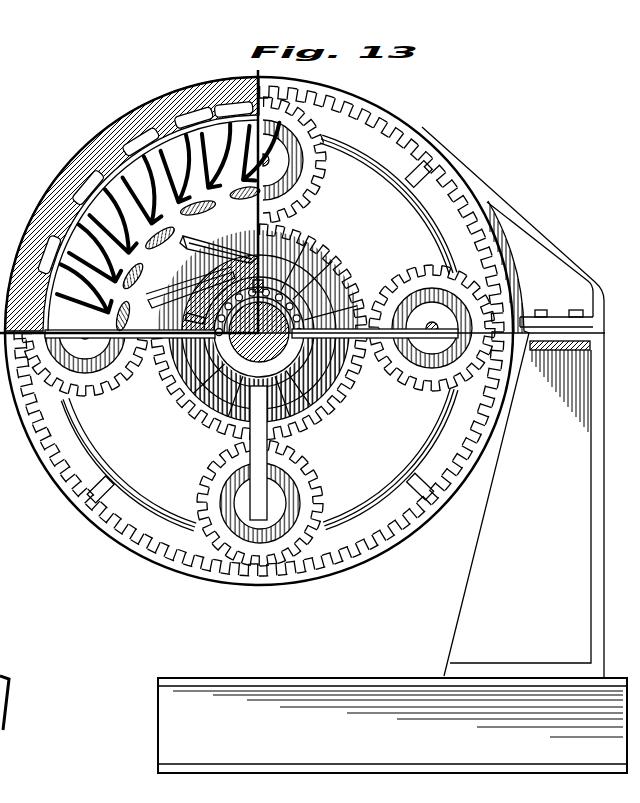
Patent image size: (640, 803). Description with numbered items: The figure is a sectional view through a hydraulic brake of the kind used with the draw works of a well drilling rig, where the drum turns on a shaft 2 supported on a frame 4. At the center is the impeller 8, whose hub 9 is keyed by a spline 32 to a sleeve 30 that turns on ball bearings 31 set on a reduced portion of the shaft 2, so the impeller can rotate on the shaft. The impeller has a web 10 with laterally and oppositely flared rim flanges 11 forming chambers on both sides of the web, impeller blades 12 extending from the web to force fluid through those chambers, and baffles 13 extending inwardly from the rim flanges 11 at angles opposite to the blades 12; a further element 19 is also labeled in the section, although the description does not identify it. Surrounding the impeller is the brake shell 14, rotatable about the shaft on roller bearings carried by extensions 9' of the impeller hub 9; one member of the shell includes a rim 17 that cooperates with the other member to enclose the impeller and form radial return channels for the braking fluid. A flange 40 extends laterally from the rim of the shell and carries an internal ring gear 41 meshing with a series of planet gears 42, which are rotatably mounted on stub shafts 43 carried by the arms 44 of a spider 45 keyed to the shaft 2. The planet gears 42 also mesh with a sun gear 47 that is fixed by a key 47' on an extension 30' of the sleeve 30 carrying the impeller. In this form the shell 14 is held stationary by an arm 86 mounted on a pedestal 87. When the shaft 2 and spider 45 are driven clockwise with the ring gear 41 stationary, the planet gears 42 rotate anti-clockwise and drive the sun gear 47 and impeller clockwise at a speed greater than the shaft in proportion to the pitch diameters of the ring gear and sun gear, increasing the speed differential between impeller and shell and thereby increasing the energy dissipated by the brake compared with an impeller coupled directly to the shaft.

The shaft 2 is at (267, 332).
The frame 4 is at (400, 676).
The impeller 8 is at (88, 162).
The hub 9 is at (219, 245).
The extensions 9' is at (179, 322).
The web 10 is at (97, 233).
The rim flanges 11 is at (157, 113).
The impeller blades 12 is at (190, 270).
The baffles 13 is at (118, 135).
The brake shell 14 is at (192, 104).
The rim 17 is at (63, 188).
The pawl section 19 is at (163, 262).
The sleeve 30 is at (190, 287).
The extension of the sleeve 30' is at (268, 332).
The ball bearings 31 is at (283, 280).
The spline 32 is at (255, 279).
The flange 40 is at (418, 141).
The internal ring gear 41 is at (388, 130).
The planet gears 42 is at (315, 182).
The stub shafts 43 is at (318, 163).
The arms 44 is at (322, 442).
The spider 45 is at (193, 426).
The sun gear 47 is at (389, 204).
The key 47' is at (374, 209).
The arm 86 is at (545, 232).
The pedestal 87 is at (478, 537).